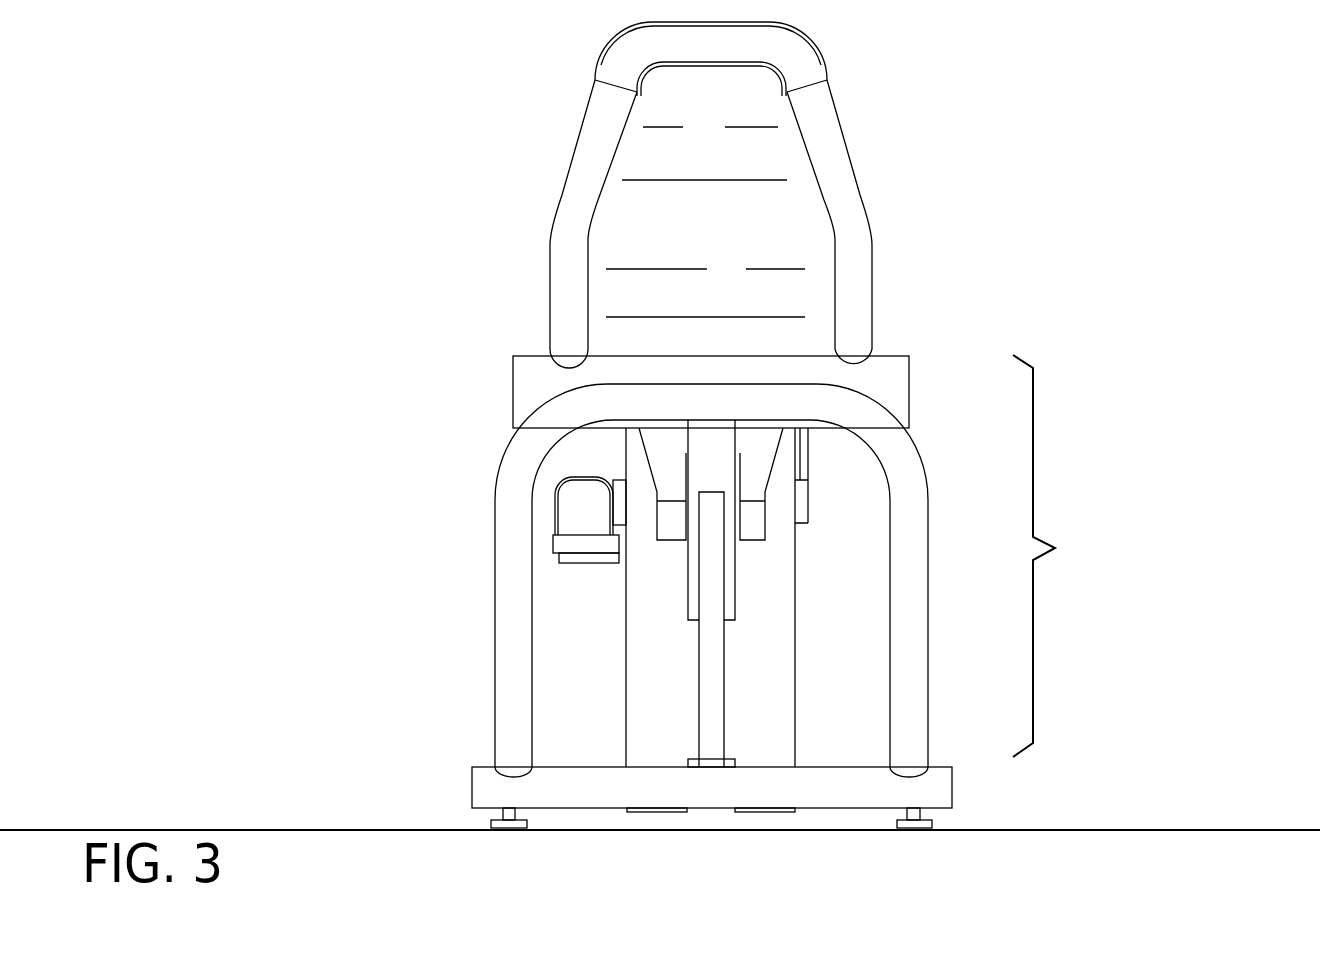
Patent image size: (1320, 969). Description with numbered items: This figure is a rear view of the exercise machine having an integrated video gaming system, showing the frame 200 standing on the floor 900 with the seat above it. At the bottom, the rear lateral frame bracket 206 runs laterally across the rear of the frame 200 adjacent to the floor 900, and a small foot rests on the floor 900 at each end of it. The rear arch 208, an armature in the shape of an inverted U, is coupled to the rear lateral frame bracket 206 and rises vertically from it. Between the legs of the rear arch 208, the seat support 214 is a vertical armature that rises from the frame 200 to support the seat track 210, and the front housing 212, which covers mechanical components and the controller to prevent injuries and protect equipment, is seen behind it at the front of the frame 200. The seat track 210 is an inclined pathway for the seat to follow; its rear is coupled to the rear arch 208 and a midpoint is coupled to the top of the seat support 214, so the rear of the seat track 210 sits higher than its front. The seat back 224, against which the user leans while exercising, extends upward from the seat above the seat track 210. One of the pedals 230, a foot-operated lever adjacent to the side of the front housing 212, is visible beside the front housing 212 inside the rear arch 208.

The frame 200 is at (1068, 556).
The rear lateral frame bracket 206 is at (482, 787).
The rear arch 208 is at (508, 572).
The seat track 210 is at (702, 460).
The front housing 212 is at (632, 655).
The seat support 214 is at (713, 673).
The seat back 224 is at (838, 188).
The pedals 230 is at (578, 503).
The floor 900 is at (1172, 830).